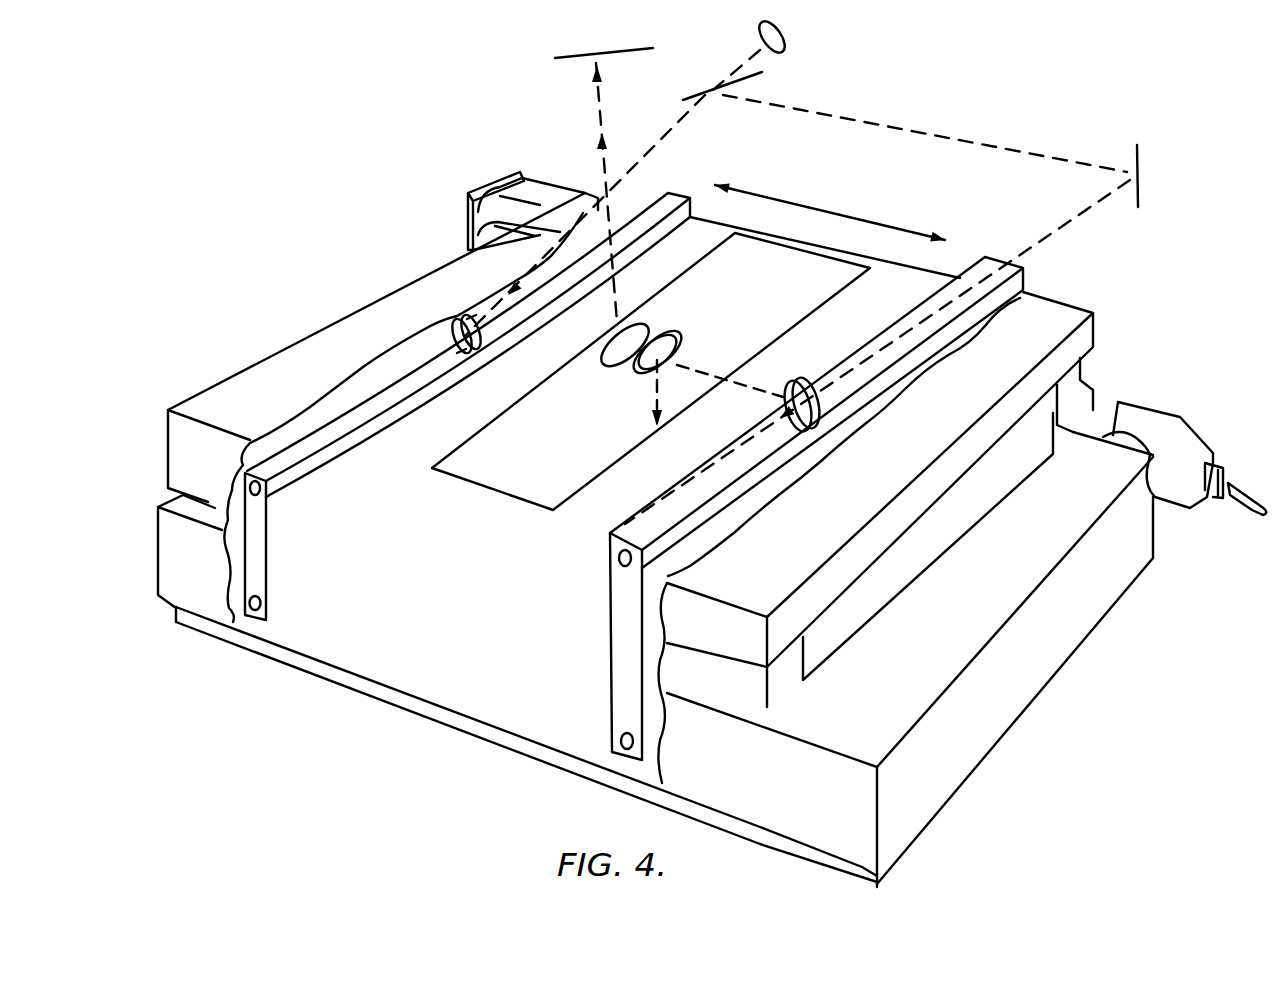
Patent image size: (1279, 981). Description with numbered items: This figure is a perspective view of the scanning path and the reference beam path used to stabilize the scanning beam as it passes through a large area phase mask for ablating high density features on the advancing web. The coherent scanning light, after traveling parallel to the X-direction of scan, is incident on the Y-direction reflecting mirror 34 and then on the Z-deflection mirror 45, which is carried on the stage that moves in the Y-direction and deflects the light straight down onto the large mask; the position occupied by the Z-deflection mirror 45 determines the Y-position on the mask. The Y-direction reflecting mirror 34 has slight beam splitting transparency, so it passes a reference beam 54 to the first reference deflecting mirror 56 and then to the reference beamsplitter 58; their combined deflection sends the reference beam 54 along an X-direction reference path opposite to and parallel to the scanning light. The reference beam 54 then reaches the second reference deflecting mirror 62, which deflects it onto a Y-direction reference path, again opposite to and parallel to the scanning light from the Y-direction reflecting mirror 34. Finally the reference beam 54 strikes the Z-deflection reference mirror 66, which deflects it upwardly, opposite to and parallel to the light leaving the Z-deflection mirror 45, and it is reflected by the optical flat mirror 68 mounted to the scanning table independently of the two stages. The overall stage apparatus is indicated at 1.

The stage apparatus 1 is at (343, 316).
The Y-direction reflecting mirror 34 is at (808, 382).
The Z-deflection mirror 45 is at (677, 349).
The reference beam 54 is at (1072, 223).
The first reference deflecting mirror 56 is at (1143, 165).
The reference beamsplitter 58 is at (690, 92).
The second reference deflecting mirror 62 is at (458, 334).
The Z-deflection reference mirror 66 is at (648, 324).
The optical flat mirror 68 is at (596, 54).